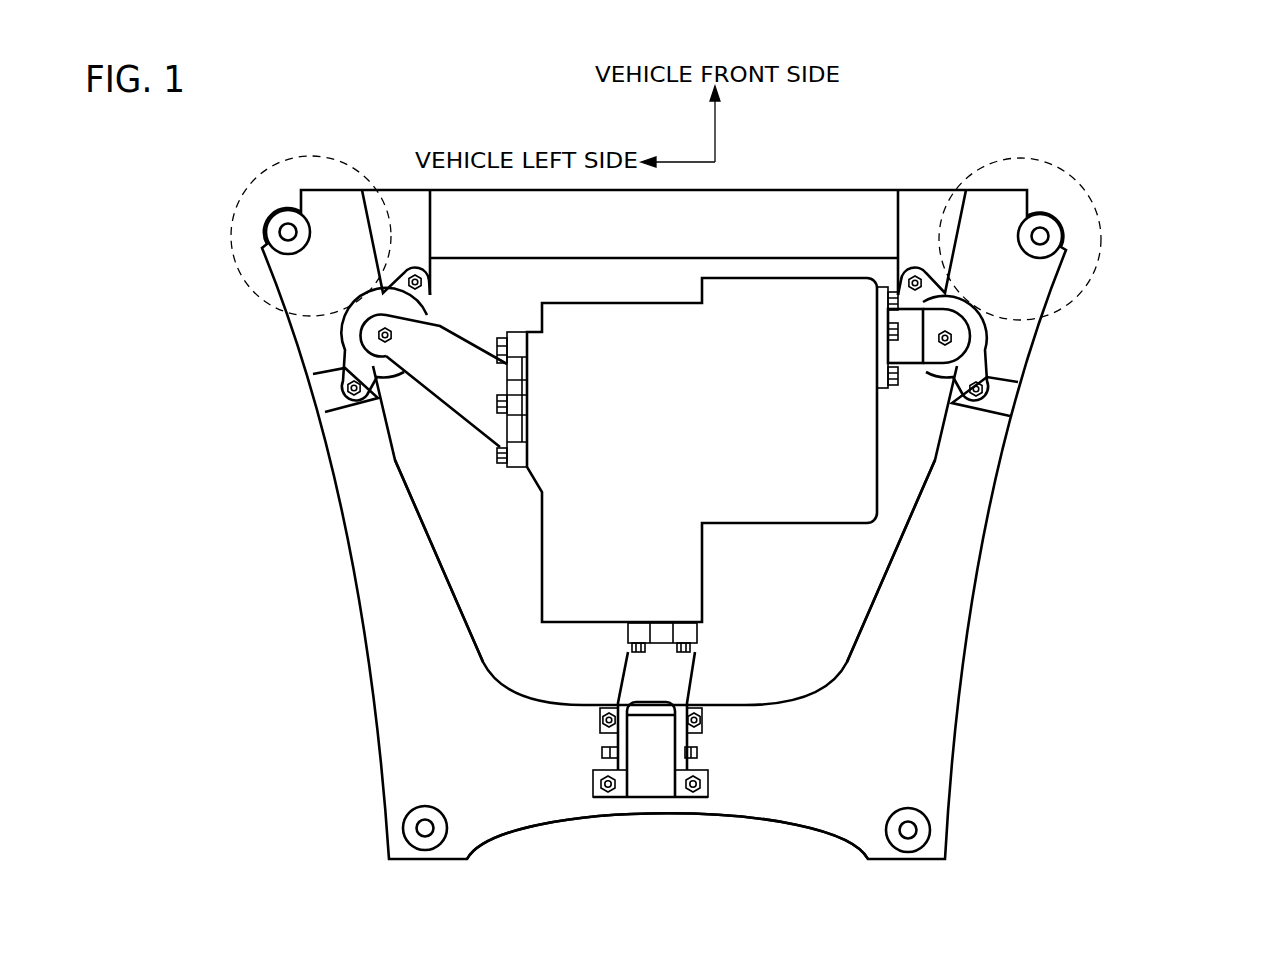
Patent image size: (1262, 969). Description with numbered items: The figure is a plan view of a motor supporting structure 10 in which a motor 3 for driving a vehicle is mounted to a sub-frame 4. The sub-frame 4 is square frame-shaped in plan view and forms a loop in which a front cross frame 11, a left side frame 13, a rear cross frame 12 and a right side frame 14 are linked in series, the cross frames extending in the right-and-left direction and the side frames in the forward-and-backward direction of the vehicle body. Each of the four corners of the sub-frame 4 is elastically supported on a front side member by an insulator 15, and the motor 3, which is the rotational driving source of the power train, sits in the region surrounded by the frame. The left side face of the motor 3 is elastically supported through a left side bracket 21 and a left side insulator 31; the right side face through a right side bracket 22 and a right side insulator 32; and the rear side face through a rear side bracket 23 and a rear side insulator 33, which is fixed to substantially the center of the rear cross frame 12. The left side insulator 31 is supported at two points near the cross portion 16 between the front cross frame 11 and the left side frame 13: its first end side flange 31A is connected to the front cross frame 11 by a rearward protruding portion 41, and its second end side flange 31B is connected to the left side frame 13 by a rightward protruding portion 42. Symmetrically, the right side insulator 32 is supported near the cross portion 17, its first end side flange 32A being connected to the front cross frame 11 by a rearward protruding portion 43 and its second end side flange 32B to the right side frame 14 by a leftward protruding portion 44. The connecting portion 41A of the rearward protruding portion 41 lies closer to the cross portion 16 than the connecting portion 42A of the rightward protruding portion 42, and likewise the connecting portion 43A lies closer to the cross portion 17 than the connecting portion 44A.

The motor 3 is at (847, 468).
The sub-frame 4 is at (980, 664).
The motor supporting structure 10 is at (1152, 466).
The front cross frame 11 is at (817, 212).
The rear cross frame 12 is at (763, 790).
The left side frame 13 is at (393, 596).
The right side frame 14 is at (932, 596).
The insulator 15 is at (272, 232).
The cross portion 16 is at (264, 170).
The cross portion 17 is at (1066, 172).
The left side bracket 21 is at (463, 385).
The right side bracket 22 is at (905, 364).
The rear side bracket 23 is at (630, 670).
The left side insulator 31 is at (368, 405).
The first end side flange 31A is at (397, 273).
The second end side flange 31B is at (355, 380).
The right side insulator 32 is at (937, 372).
The first end side flange 32A is at (933, 274).
The second end side flange 32B is at (976, 377).
The rear side insulator 33 is at (648, 778).
The rearward protruding portion 41 is at (380, 190).
The connecting portion 41A is at (410, 230).
The rightward protruding portion 42 is at (281, 393).
The connecting portion 42A is at (328, 392).
The rearward protruding portion 43 is at (920, 200).
The connecting portion 43A is at (920, 232).
The leftward protruding portion 44 is at (1057, 396).
The connecting portion 44A is at (1005, 398).